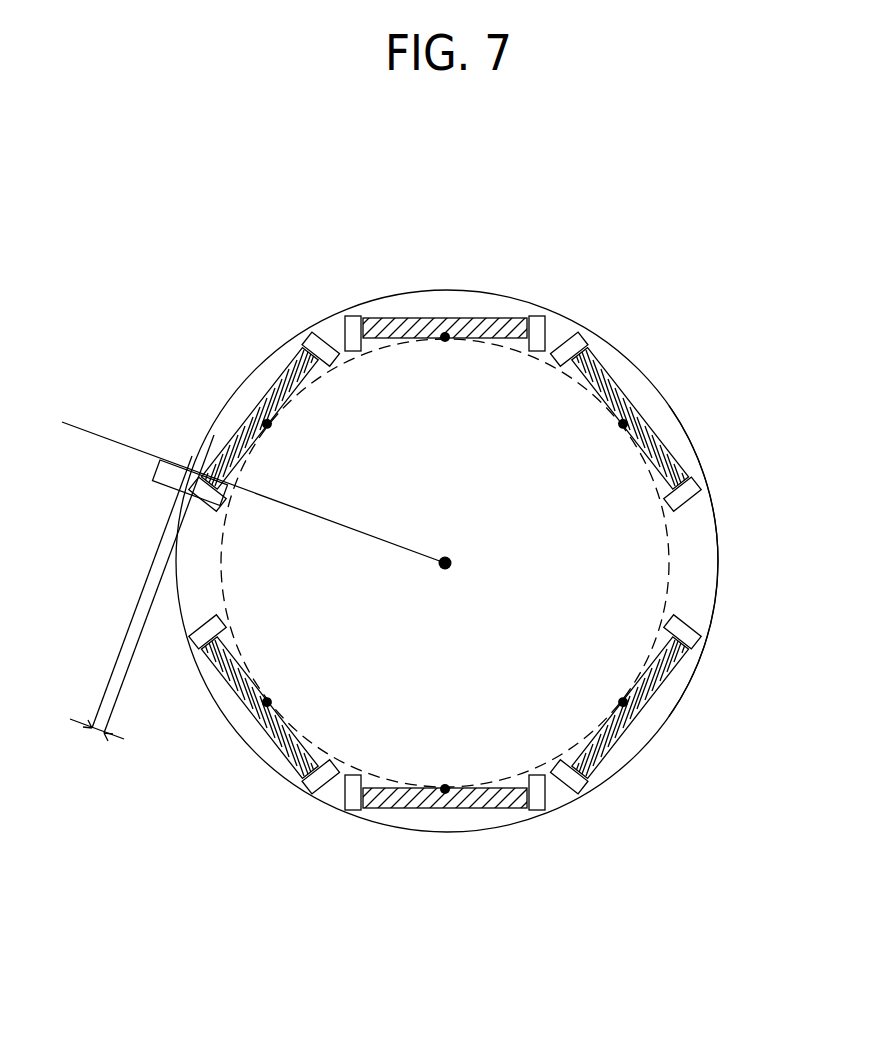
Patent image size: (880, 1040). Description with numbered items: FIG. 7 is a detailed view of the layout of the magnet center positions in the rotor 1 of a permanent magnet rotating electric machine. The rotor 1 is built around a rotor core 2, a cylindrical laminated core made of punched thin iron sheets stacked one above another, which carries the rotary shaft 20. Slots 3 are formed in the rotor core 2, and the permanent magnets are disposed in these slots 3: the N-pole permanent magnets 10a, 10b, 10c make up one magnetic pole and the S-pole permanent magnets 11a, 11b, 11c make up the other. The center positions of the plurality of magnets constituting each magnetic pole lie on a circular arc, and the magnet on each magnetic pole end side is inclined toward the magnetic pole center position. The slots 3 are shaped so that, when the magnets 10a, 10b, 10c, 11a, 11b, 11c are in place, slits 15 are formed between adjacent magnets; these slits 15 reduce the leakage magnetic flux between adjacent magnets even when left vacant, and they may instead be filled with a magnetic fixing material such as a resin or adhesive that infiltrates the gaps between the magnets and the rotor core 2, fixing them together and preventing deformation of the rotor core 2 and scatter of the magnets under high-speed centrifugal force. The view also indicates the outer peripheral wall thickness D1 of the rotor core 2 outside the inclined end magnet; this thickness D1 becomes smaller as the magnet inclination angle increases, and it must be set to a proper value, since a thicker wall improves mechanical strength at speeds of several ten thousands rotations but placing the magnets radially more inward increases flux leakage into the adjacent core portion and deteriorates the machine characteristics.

The rotor 1 is at (175, 525).
The rotor core 2 is at (207, 573).
The slots 3 is at (407, 318).
The N-pole permanent magnet 10a is at (243, 428).
The N-pole permanent magnet 10b is at (486, 320).
The N-pole permanent magnet 10c is at (630, 375).
The S-pole permanent magnet 11a is at (238, 715).
The S-pole permanent magnet 11b is at (481, 807).
The S-pole permanent magnet 11c is at (630, 742).
The slits 15 is at (350, 326).
The rotary shaft 20 is at (718, 563).
The outer peripheral wall thickness of the rotor core D1 is at (136, 588).